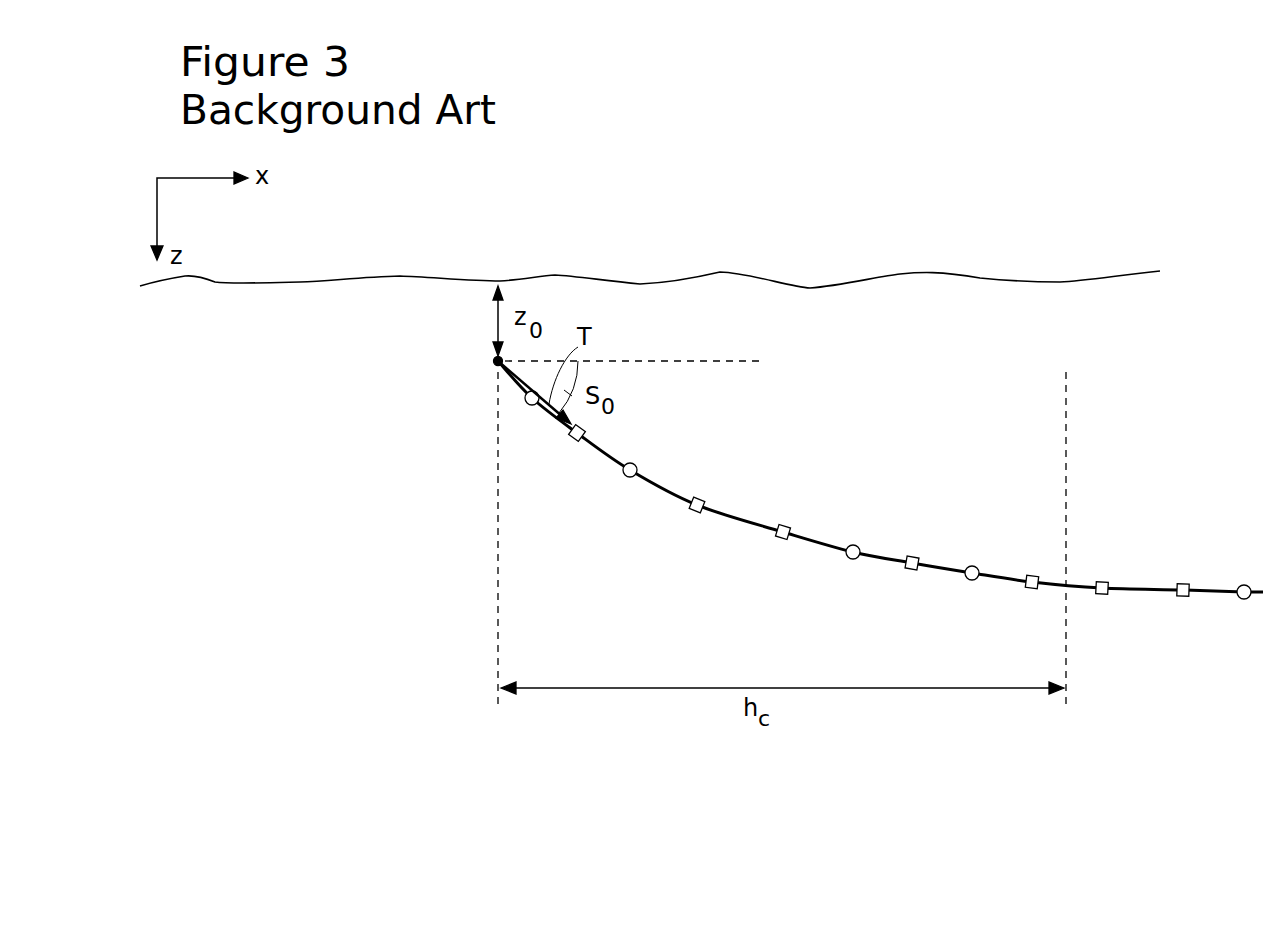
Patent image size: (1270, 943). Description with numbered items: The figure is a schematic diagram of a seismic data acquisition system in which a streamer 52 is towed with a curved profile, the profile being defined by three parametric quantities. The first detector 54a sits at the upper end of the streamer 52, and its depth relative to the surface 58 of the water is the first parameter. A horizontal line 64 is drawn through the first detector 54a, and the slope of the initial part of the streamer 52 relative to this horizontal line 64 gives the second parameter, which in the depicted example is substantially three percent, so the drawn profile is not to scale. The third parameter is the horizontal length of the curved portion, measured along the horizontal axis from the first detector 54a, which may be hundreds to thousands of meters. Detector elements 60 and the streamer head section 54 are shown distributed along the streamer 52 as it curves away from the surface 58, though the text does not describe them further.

The streamer 52 is at (735, 497).
The cable head section 54 is at (590, 426).
The first detector 54a is at (494, 361).
The surface 58 is at (718, 272).
The depth control devices / sensors 60 is at (637, 463).
The horizontal line 64 is at (700, 361).